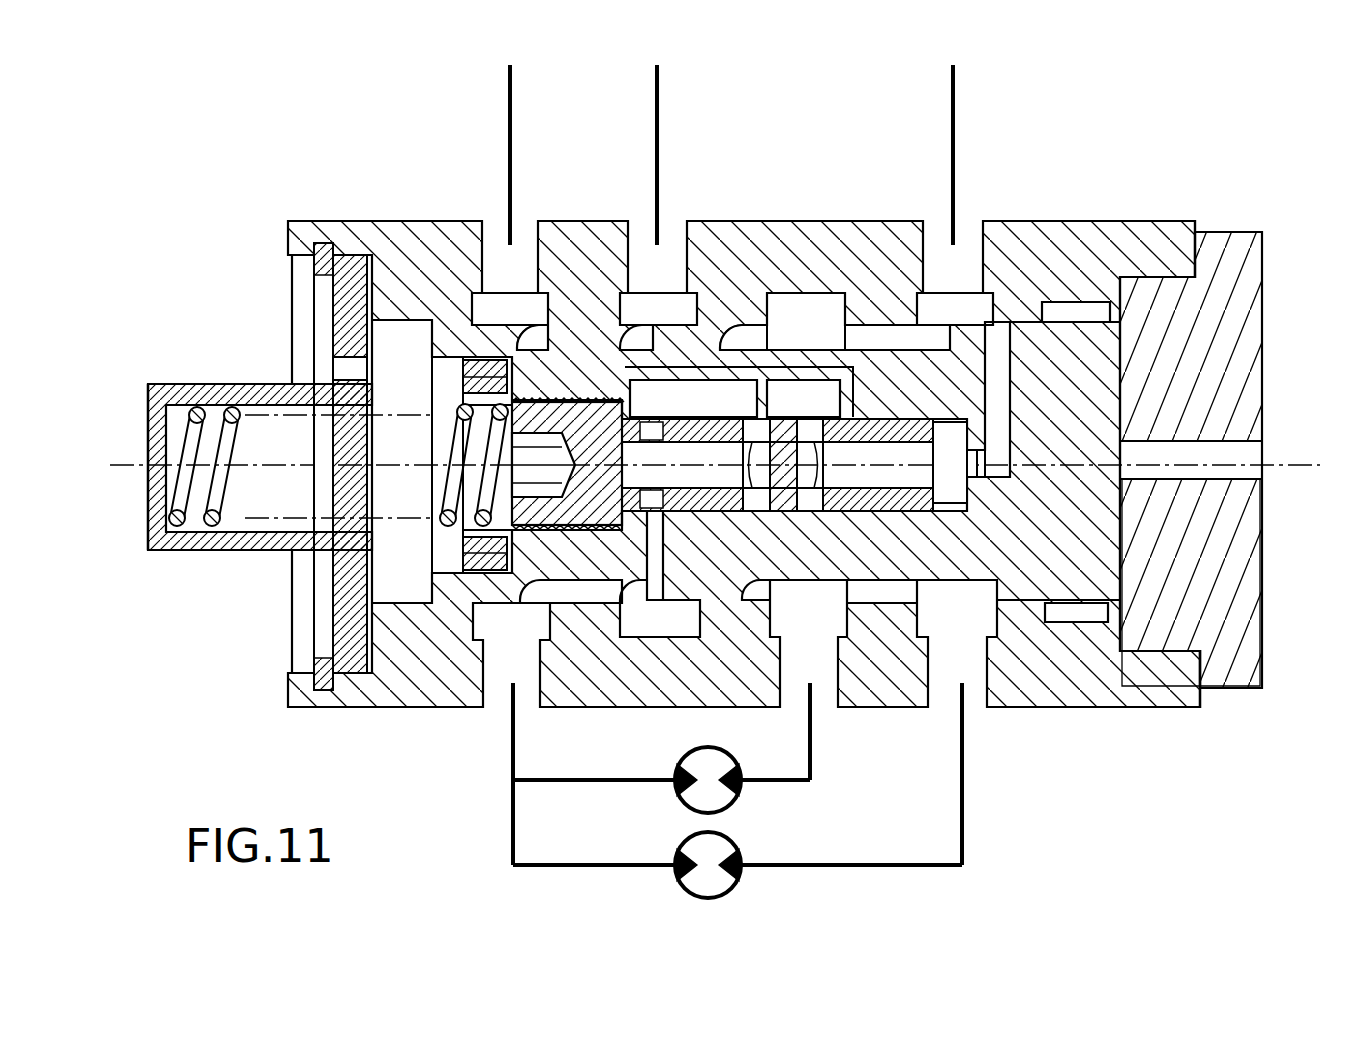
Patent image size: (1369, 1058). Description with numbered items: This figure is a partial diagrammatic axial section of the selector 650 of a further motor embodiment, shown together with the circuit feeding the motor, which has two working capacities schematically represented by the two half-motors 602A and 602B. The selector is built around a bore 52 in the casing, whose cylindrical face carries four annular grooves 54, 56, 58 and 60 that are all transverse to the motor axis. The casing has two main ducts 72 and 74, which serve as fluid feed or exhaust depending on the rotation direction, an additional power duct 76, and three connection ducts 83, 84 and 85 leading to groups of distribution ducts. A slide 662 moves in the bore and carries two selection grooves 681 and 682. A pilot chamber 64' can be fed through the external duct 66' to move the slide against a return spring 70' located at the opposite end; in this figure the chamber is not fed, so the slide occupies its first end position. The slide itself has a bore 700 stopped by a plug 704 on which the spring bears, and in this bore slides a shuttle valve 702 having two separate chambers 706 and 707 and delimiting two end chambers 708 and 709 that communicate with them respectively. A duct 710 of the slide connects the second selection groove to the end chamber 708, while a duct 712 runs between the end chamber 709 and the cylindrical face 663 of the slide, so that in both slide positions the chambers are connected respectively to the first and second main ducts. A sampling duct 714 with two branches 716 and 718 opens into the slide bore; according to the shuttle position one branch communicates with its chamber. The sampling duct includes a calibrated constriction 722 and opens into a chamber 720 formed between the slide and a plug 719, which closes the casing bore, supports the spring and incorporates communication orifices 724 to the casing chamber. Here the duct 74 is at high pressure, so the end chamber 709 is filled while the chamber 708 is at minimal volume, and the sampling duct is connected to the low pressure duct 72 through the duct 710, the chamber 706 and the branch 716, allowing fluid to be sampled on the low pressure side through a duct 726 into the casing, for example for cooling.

The bore 52 is at (405, 320).
The annular groove 54 is at (517, 307).
The annular groove 56 is at (712, 300).
The annular groove 58 is at (832, 300).
The annular groove 60 is at (996, 298).
The main duct 72 is at (525, 234).
The main duct 74 is at (962, 240).
The additional power duct 76 is at (660, 240).
The selection groove 681 is at (797, 350).
The selection groove 682 is at (570, 350).
The connection duct 83 is at (505, 700).
The connection duct 84 is at (818, 700).
The connection duct 85 is at (978, 700).
The half-motor 602A is at (688, 797).
The half-motor 602B is at (685, 887).
The selector 650 is at (1272, 348).
The external duct 66' is at (1230, 432).
The slide 662 is at (1090, 524).
The cylindrical face 663 is at (1078, 308).
The pilot chamber 64' is at (1123, 705).
The bore 700 is at (908, 419).
The shuttle valve 702 is at (852, 472).
The plug 704 is at (503, 524).
The chamber 706 is at (697, 460).
The chamber 707 is at (785, 508).
The end chamber 708 is at (613, 526).
The end chamber 709 is at (962, 456).
The duct 710 is at (657, 532).
The duct 712 is at (1000, 402).
The sampling duct 714 is at (623, 374).
The branch 716 is at (763, 410).
The branch 718 is at (862, 417).
The plug 719 is at (208, 522).
The chamber 720 is at (250, 507).
The calibrated constriction 722 is at (470, 385).
The communication orifice 724 is at (340, 363).
The duct 726 is at (300, 268).
The return spring 70' is at (159, 443).